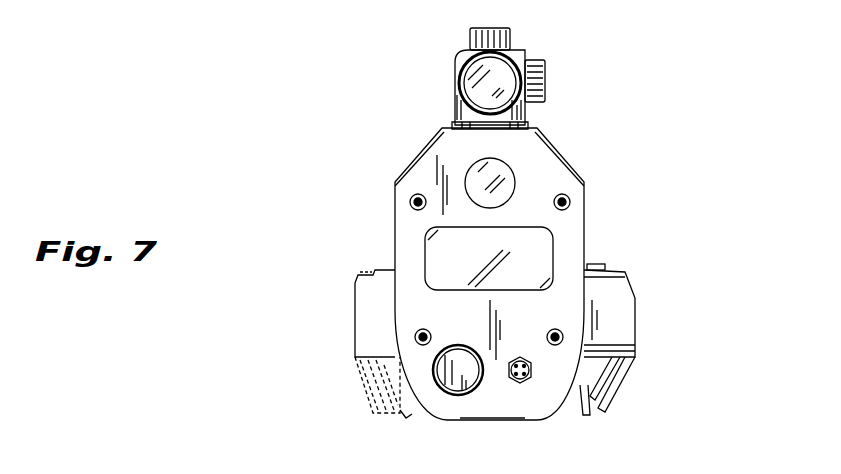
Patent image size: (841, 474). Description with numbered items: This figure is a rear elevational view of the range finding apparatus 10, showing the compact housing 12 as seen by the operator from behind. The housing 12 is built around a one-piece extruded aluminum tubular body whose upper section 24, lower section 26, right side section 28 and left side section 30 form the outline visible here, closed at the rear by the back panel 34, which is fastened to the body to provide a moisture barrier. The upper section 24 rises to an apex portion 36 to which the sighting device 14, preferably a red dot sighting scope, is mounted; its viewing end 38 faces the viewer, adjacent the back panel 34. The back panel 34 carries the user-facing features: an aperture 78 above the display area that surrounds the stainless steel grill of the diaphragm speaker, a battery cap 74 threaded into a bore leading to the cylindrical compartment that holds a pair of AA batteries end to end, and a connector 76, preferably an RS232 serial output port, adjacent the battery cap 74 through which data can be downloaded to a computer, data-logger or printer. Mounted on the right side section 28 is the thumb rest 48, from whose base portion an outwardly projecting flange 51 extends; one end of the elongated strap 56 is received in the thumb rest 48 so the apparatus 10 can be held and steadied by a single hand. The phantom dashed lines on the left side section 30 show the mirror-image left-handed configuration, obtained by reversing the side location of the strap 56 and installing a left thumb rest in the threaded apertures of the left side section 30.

The range finding apparatus 10 is at (630, 68).
The housing 12 is at (588, 232).
The sighting device 14 is at (455, 88).
The upper section 24 is at (541, 127).
The lower section 26 is at (470, 422).
The right side section 28 is at (585, 178).
The left side section 30 is at (393, 262).
The back panel 34 is at (582, 256).
The apex portion 36 is at (425, 120).
The viewing end 38 is at (464, 67).
The thumb rest 48 is at (350, 312).
The outwardly projecting flange 51 is at (615, 380).
The elongated strap 56 is at (370, 400).
The battery cap 74 is at (435, 364).
The connector 76 is at (518, 384).
The aperture 78 is at (512, 182).